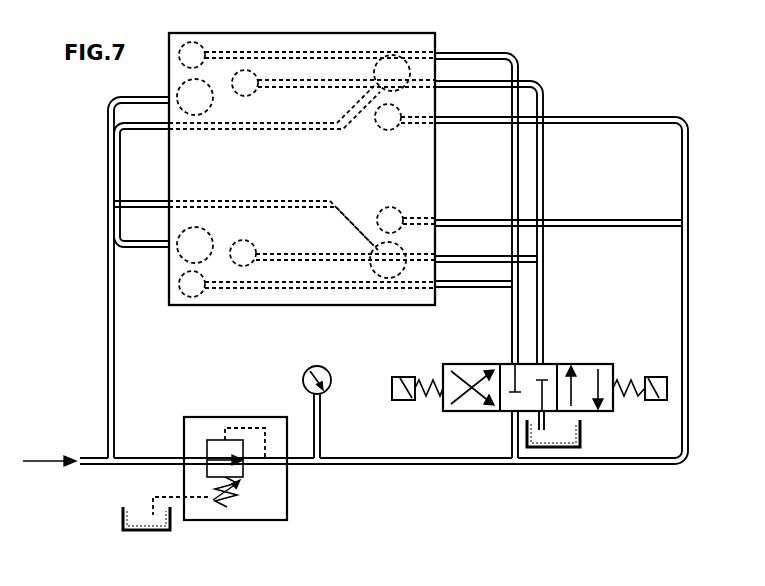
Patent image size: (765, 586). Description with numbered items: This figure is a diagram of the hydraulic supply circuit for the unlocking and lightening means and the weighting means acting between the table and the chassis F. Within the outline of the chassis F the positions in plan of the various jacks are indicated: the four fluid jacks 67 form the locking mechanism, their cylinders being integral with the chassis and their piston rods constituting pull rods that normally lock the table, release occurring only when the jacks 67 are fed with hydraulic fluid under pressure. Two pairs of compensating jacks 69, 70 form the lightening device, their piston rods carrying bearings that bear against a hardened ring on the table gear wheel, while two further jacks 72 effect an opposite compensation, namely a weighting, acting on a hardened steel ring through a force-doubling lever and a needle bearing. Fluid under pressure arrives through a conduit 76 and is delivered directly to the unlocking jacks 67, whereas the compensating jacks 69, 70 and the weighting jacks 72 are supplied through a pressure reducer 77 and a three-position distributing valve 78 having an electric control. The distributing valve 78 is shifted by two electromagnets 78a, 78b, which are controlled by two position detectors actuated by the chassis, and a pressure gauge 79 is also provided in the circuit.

The chassis F is at (329, 317).
The fluid jacks 67 is at (213, 93).
The compensating jacks 69 is at (388, 131).
The compensating jacks 70 is at (258, 94).
The weighting jacks 72 is at (183, 64).
The conduit 76 is at (99, 457).
The pressure reducer 77 is at (225, 407).
The three-position distributing valve 78 is at (554, 366).
The electromagnet 78a is at (403, 376).
The electromagnet 78b is at (654, 376).
The pressure gauge 79 is at (303, 382).